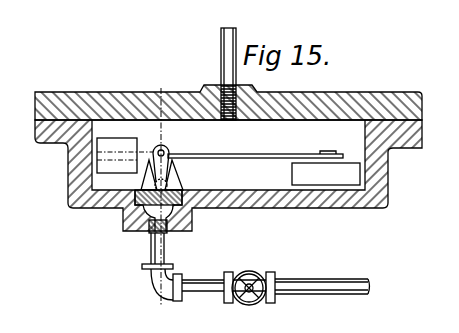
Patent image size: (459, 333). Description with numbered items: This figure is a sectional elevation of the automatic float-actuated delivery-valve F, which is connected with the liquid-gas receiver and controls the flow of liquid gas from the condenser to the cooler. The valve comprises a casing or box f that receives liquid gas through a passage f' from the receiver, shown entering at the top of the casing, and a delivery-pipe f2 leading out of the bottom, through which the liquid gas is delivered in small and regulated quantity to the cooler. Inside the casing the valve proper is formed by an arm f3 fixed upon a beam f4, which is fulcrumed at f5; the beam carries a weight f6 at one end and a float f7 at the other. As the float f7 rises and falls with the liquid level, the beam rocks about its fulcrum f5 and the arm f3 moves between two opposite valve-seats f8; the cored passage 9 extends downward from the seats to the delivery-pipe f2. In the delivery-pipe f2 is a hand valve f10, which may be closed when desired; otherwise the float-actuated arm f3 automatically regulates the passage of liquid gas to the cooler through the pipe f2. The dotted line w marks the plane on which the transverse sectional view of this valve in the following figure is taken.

The float-actuated delivery-valve F is at (228, 88).
The casing f is at (228, 154).
The passage f' is at (228, 65).
The delivery-pipe f2 is at (164, 260).
The valve arm f3 is at (160, 187).
The beam f4 is at (255, 147).
The fulcrum f5 is at (164, 152).
The weight f6 is at (125, 158).
The float f7 is at (326, 174).
The valve-seats f8 is at (176, 190).
The valve f10 is at (249, 276).
The valve plug 9 is at (154, 185).
The section line w is at (161, 197).